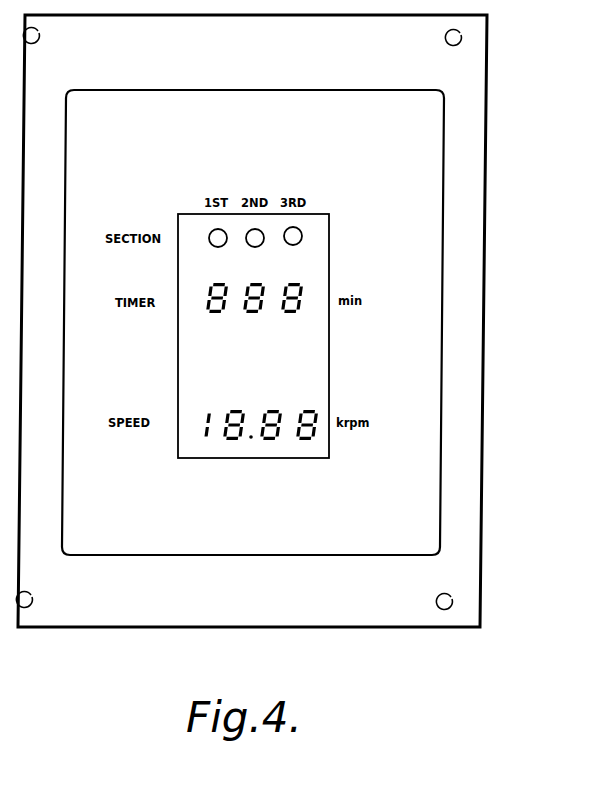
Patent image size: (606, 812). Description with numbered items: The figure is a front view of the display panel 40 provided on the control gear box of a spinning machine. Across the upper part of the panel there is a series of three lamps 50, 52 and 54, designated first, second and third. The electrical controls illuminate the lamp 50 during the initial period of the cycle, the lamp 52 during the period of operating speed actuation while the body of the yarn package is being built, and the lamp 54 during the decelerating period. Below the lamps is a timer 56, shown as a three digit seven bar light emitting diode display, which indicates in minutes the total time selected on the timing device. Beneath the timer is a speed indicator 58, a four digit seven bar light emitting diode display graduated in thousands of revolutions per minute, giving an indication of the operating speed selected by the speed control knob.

The display panel 40 is at (472, 348).
The lamp 50 is at (216, 232).
The lamp 52 is at (258, 246).
The lamp 54 is at (300, 232).
The timer 56 is at (305, 312).
The speed indicator 58 is at (320, 437).